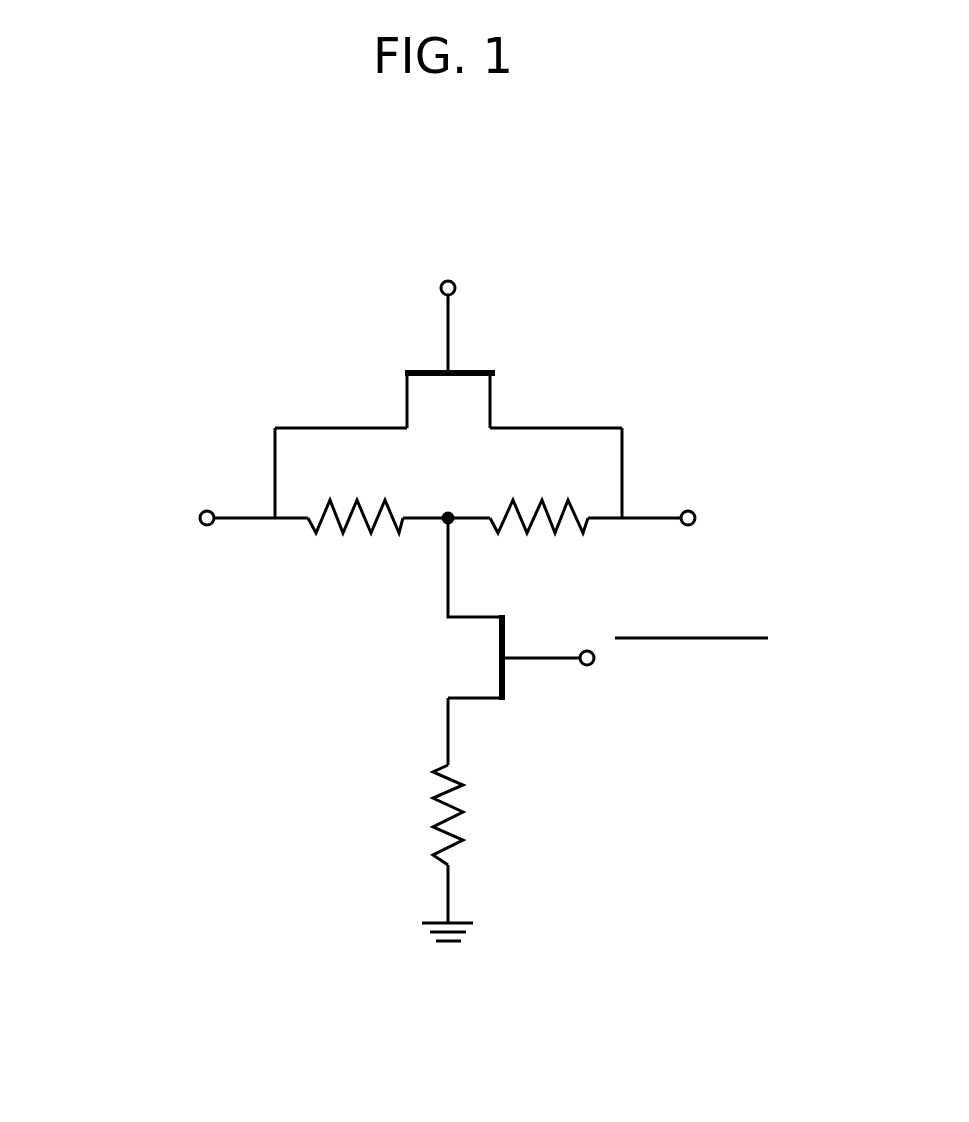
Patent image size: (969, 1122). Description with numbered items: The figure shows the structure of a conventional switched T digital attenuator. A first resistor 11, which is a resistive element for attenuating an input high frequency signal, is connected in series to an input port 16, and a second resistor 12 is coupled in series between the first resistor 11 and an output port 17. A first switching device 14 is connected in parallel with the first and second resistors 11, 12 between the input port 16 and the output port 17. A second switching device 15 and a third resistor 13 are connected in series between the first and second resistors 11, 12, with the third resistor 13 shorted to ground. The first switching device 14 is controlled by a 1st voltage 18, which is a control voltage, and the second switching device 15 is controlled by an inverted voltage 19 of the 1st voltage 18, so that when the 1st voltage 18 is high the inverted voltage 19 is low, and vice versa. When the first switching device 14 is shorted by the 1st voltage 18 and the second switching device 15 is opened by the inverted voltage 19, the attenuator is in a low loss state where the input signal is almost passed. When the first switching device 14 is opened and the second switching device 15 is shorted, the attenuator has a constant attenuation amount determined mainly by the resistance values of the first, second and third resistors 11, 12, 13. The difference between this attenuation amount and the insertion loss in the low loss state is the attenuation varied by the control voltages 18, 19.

The first resistor 11 is at (357, 497).
The second resistor 12 is at (540, 497).
The third resistor 13 is at (467, 815).
The first switching device 14 is at (496, 374).
The second switching device 15 is at (503, 700).
The input port 16 is at (207, 510).
The output port 17 is at (688, 510).
The 1st voltage 18 is at (456, 288).
The inverted 1st voltage 19 is at (587, 650).